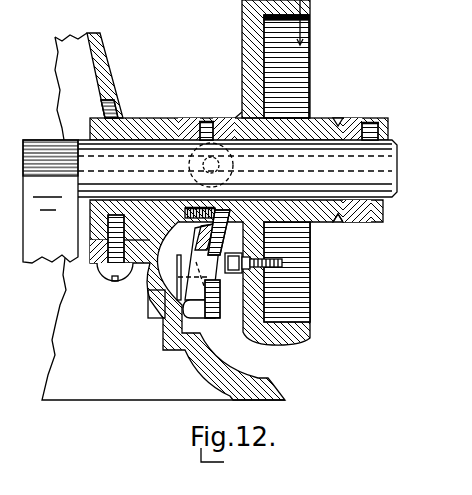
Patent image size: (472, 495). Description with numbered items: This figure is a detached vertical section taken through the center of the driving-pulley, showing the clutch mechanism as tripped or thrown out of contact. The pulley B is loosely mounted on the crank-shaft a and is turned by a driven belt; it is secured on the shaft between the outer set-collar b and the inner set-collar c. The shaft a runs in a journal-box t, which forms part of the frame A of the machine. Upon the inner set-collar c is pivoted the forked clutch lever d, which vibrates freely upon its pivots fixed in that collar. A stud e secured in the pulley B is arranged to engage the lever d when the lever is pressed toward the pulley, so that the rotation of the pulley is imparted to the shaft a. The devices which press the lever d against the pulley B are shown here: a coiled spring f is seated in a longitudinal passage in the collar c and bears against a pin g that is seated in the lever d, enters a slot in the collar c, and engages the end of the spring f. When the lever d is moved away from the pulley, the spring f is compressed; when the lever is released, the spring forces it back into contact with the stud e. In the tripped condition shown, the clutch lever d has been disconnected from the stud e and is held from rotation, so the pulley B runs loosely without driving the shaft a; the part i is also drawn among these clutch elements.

The frame A is at (163, 216).
The pulley B is at (163, 163).
The crank-shaft a is at (18, 165).
The outer set-collar b is at (384, 215).
The inner set-collar c is at (222, 126).
The forked clutch lever d is at (200, 270).
The stud e is at (253, 263).
The coiled spring f is at (146, 224).
The pin g is at (224, 232).
The pin i is at (216, 299).
The journal-box t is at (239, 250).